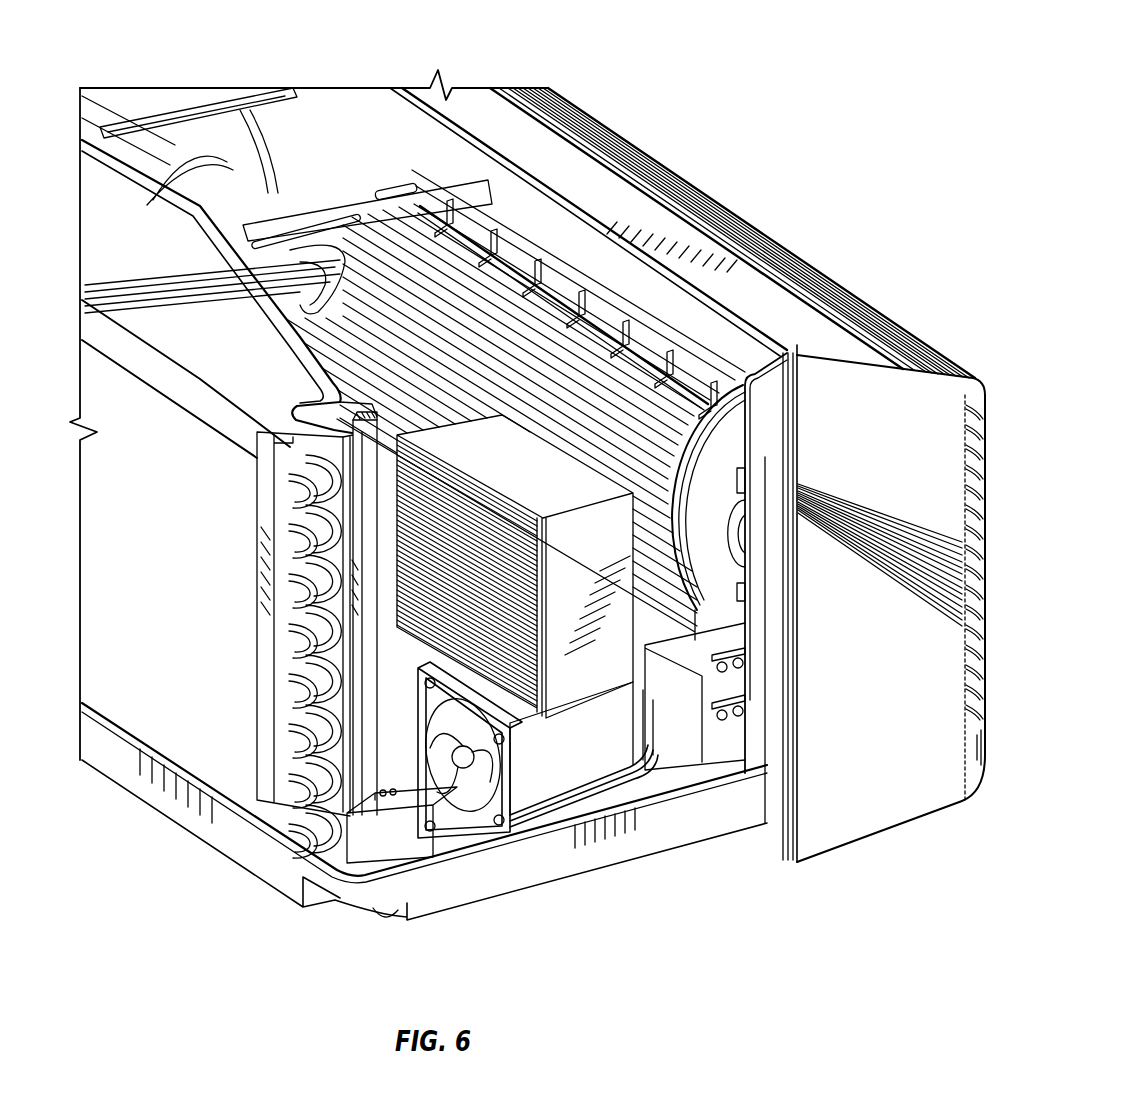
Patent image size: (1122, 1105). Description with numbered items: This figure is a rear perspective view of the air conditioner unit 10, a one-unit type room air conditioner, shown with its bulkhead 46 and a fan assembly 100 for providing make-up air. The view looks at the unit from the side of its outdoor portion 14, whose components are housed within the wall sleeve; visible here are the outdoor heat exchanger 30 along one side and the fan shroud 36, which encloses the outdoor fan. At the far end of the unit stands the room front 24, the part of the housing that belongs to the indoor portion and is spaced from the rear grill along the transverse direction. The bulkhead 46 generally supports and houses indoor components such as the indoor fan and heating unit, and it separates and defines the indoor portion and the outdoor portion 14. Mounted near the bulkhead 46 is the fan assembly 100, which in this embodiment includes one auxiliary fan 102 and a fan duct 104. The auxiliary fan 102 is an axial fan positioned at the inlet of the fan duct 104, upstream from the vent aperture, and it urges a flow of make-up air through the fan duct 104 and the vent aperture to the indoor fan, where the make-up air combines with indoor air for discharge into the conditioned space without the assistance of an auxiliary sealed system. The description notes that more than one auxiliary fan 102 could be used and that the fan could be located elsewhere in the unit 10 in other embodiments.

The air conditioner unit 10 is at (690, 58).
The outdoor portion 14 is at (607, 886).
The room front 24 is at (930, 413).
The outdoor heat exchanger 30 is at (293, 803).
The fan shroud 36 is at (129, 243).
The bulkhead 46 is at (718, 610).
The fan assembly 100 is at (593, 435).
The auxiliary fan 102 is at (458, 814).
The fan duct 104 is at (597, 737).